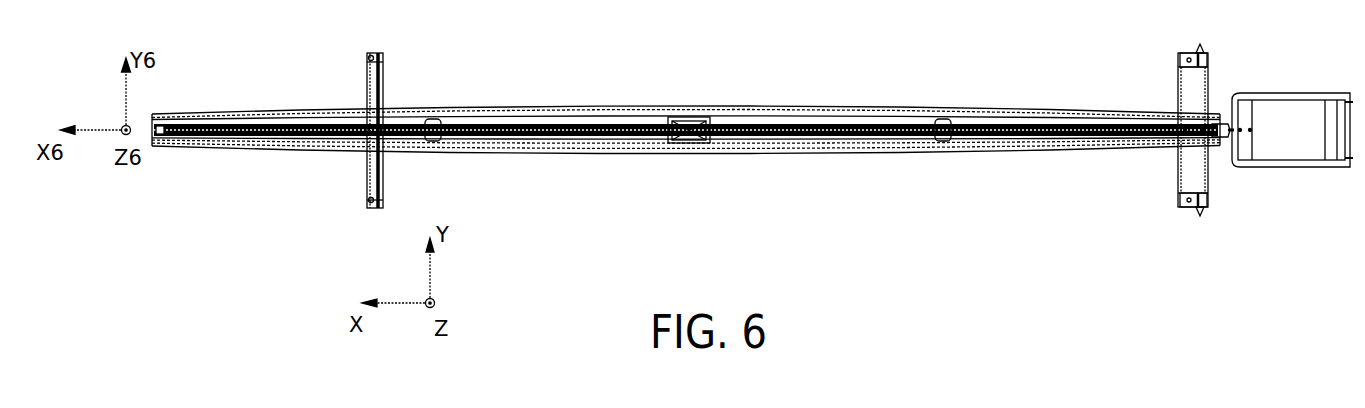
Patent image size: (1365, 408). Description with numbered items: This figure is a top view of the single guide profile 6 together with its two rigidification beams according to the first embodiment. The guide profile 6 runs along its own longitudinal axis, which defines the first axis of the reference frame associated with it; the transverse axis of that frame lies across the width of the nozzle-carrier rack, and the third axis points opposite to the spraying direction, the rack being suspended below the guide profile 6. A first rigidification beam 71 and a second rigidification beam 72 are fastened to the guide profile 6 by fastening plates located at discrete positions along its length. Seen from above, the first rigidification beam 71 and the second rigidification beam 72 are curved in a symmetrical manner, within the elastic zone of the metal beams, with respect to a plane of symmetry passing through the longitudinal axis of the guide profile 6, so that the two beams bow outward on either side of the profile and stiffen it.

The guide profile 6 is at (686, 128).
The first rigidification beam 71 is at (583, 154).
The second rigidification beam 72 is at (543, 107).